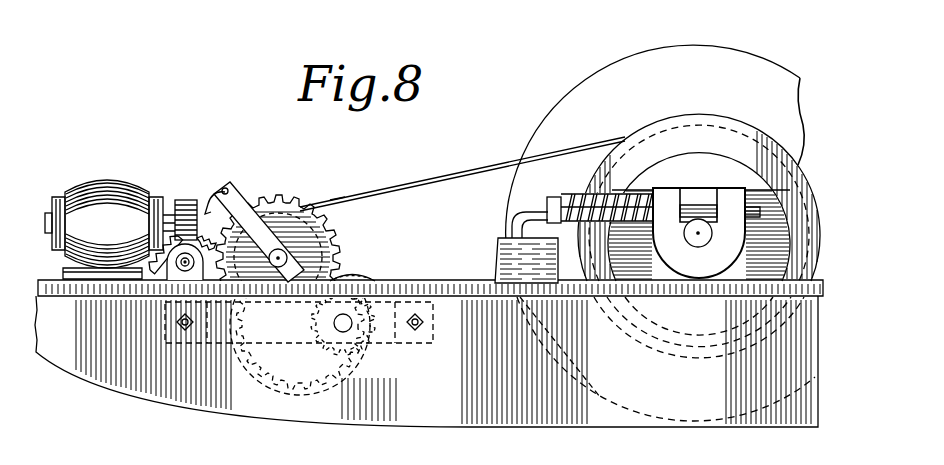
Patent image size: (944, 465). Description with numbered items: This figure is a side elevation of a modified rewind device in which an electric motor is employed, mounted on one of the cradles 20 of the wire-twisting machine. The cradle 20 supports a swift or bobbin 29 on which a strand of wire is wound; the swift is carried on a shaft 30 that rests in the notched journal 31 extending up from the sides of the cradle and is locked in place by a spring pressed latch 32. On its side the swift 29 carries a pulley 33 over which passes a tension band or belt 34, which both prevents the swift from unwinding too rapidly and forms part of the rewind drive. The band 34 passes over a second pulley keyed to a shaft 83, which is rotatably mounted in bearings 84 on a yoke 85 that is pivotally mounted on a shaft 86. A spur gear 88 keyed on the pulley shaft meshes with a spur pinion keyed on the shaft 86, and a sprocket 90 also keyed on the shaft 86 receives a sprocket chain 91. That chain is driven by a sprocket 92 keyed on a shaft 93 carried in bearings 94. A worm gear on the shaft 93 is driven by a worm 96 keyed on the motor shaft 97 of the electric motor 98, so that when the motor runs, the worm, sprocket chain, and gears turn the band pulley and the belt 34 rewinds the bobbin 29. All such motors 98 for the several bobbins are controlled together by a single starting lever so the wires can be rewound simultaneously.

The cradle 20 is at (563, 425).
The swift or bobbin 29 is at (749, 53).
The shaft 30 is at (700, 247).
The notched journal 31 is at (700, 264).
The spring pressed latch 32 is at (565, 200).
The pulley 33 is at (658, 124).
The tension band or belt 34 is at (489, 160).
The shaft 83 is at (380, 203).
The bearings 84 is at (288, 256).
The yoke 85 is at (236, 203).
The shaft 86 is at (344, 333).
The spur gear 88 is at (297, 199).
The sprocket 90 is at (283, 336).
The sprocket chain 91 is at (369, 279).
The sprocket 92 is at (207, 213).
The shaft 93 is at (183, 271).
The bearings 94 is at (175, 263).
The worm 96 is at (186, 200).
The motor shaft 97 is at (186, 206).
The motor 98 is at (104, 229).